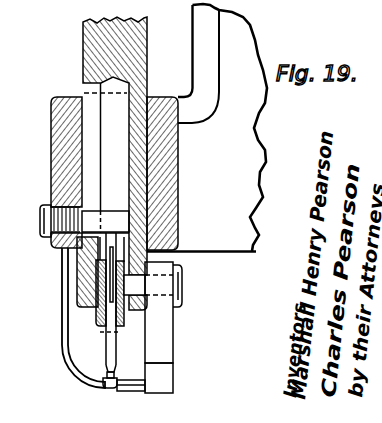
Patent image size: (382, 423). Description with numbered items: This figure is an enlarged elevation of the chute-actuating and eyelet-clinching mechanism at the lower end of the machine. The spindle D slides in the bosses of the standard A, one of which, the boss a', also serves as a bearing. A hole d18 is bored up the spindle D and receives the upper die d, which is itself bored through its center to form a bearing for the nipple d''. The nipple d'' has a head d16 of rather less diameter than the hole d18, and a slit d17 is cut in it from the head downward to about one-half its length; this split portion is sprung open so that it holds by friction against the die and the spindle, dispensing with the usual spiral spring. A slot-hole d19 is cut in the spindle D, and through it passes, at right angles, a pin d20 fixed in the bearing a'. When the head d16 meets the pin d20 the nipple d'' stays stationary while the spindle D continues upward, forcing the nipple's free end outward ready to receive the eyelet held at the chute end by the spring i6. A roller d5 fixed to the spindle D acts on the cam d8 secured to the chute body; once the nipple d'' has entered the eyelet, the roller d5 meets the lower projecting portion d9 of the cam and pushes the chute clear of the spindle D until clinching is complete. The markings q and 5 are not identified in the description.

The partial label (cut off) q is at (4, 34).
The partial label (cut off) 5 is at (5, 190).
The spindle D is at (83, 45).
The boss (bearing) a' is at (100, 173).
The slot-hole d19 is at (102, 158).
The hole bored up the spindle d18 is at (105, 163).
The pin d20 is at (43, 228).
The slit d17 is at (106, 285).
The upper die d is at (78, 297).
The nipple d'' is at (99, 310).
The spring i6 is at (63, 368).
The head of the nipple d16 is at (147, 254).
The roller d5 is at (173, 308).
The cam or projection d8 is at (162, 348).
The lower projecting portion of the cam d9 is at (162, 385).
The standard A is at (243, 163).